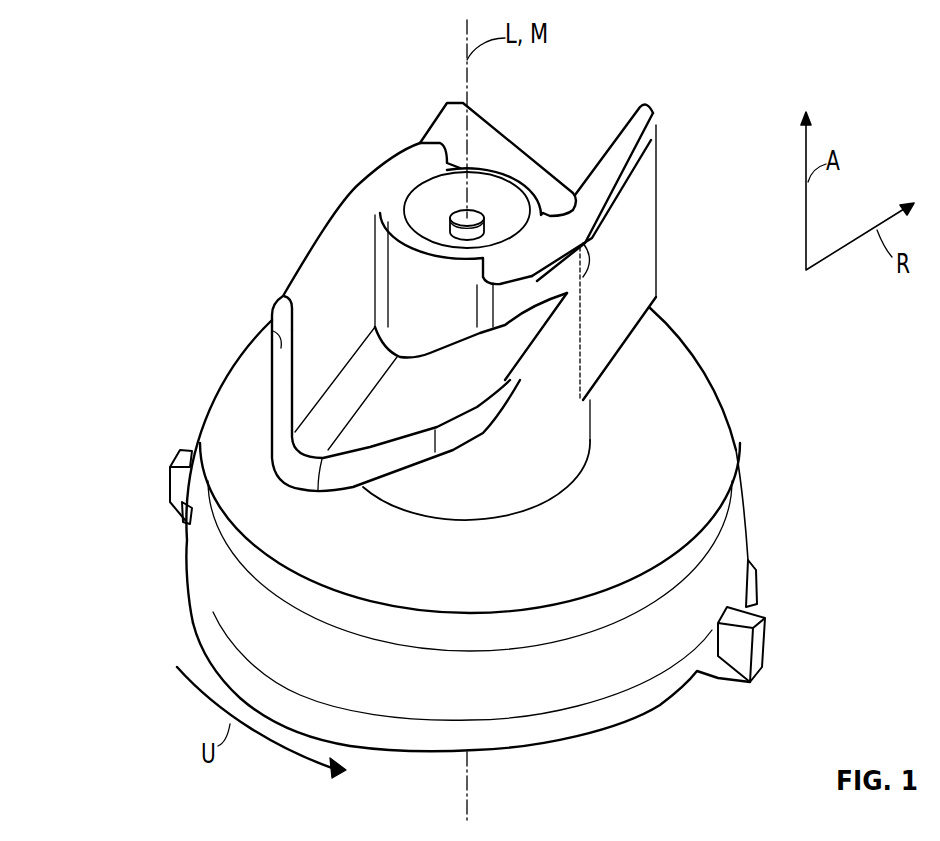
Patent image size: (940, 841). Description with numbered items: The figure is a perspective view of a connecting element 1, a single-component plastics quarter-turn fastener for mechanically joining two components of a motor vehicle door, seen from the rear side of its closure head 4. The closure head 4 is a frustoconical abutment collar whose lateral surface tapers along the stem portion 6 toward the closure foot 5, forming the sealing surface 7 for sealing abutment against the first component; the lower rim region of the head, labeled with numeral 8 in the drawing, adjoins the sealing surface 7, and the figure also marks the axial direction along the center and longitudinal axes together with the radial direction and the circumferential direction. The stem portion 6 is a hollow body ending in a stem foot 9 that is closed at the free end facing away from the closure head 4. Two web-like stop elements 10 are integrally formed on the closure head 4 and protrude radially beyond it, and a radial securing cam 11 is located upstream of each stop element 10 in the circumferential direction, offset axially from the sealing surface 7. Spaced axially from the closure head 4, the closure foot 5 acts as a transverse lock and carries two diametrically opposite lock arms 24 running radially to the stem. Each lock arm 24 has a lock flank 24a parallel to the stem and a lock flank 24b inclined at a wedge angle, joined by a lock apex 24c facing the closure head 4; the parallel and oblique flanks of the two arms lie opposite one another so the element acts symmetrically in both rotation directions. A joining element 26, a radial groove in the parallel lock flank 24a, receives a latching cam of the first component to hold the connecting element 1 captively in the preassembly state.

The connecting element 1 is at (100, 130).
The closure head 4 is at (740, 468).
The closure foot 5 is at (363, 187).
The stem portion 6 is at (560, 437).
The sealing surface 7 is at (232, 618).
The skirt 8 is at (630, 703).
The stem foot 9 is at (427, 210).
The stop element 10 is at (178, 451).
The securing cam 11 is at (180, 531).
The lock arm 24 is at (295, 277).
The lock flank 24a is at (633, 273).
The lock flank 24b is at (508, 158).
The lock apex 24c is at (293, 490).
The joining element 26 is at (277, 343).